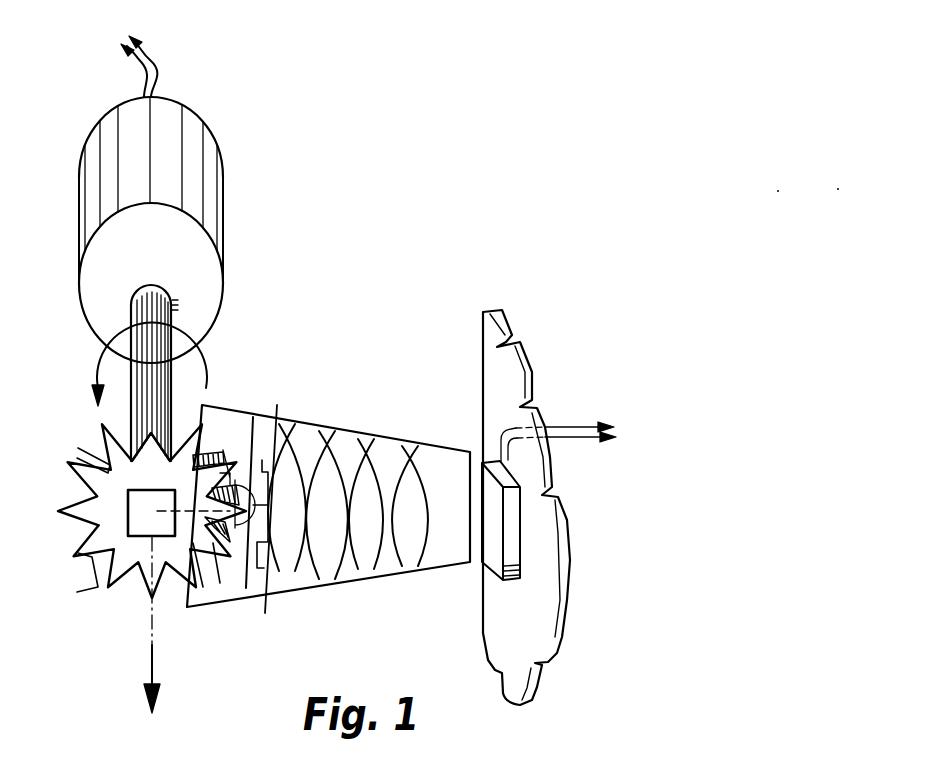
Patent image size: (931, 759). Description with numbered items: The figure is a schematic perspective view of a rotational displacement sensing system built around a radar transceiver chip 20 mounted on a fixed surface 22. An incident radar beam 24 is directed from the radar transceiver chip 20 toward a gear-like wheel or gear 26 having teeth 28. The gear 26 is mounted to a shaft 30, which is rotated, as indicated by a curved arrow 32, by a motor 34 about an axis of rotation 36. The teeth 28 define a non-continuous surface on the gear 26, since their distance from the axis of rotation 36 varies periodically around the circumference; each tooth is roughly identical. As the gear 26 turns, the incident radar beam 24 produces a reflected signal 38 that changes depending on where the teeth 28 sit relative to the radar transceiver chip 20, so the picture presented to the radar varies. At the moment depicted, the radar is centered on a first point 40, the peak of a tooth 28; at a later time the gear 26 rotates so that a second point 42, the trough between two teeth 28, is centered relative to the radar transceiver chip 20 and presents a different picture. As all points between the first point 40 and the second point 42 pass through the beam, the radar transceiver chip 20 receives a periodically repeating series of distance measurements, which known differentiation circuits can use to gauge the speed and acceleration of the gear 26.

The radar transceiver chip 20 is at (485, 548).
The fixed surface 22 is at (500, 648).
The incident radar beam 24 is at (400, 570).
The gear 26 is at (97, 545).
The teeth 28 is at (231, 475).
The shaft 30 is at (116, 401).
The curved arrow 32 is at (204, 368).
The motor 34 is at (222, 279).
The axis of rotation 36 is at (152, 655).
The reflected signal 38 is at (330, 583).
The point 40 is at (276, 416).
The point 42 is at (256, 524).